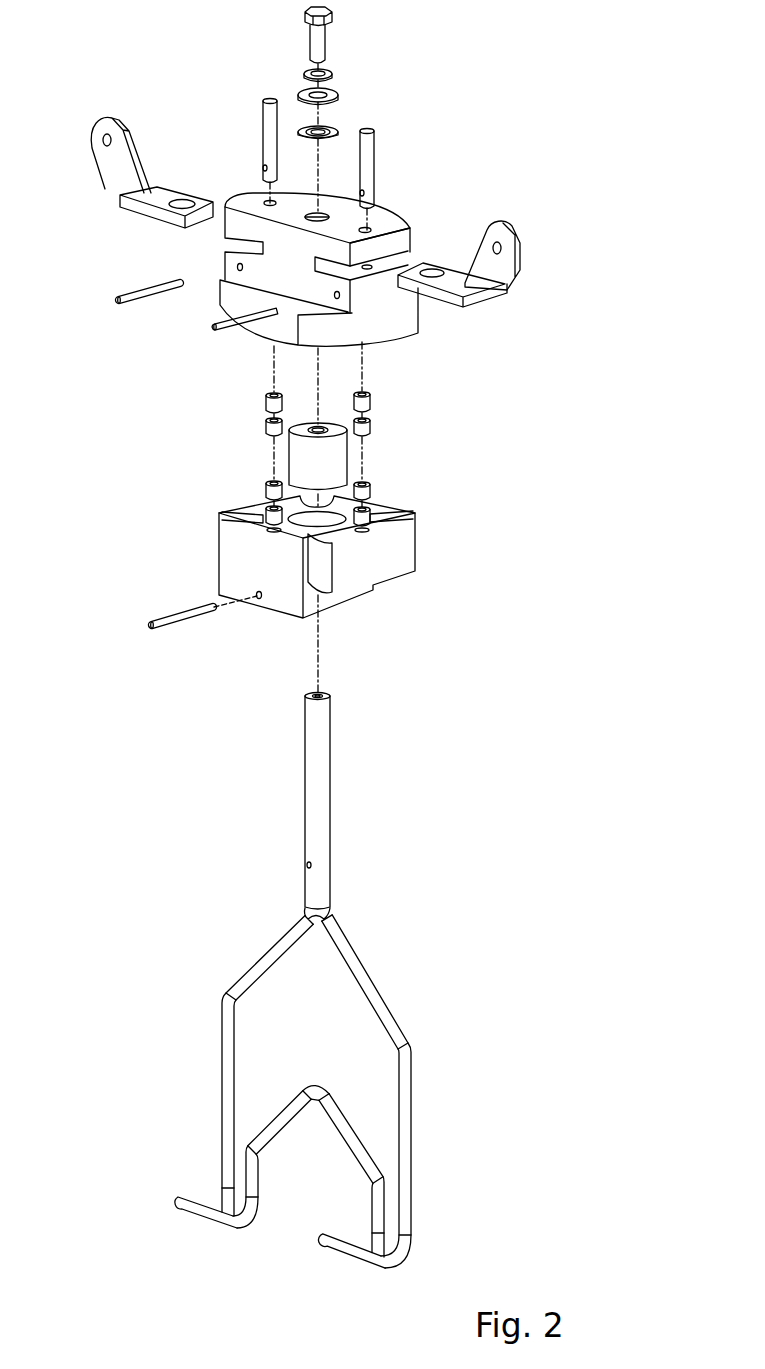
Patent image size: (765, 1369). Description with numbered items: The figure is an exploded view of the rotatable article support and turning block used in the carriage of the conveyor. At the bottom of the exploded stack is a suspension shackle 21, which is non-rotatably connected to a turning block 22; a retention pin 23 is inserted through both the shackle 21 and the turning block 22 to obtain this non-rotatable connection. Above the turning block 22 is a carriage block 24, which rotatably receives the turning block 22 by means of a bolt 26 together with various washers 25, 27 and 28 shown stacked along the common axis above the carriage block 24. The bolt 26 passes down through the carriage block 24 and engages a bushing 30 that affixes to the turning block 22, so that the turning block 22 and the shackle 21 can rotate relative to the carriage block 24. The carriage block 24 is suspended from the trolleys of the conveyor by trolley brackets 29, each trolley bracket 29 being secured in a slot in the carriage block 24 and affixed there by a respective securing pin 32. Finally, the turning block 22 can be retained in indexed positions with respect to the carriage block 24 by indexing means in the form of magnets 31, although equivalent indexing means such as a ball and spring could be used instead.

The suspension shackle 21 is at (410, 1095).
The turning block 22 is at (232, 562).
The retention pin 23 is at (183, 612).
The carriage block 24 is at (392, 327).
The washer 25 is at (335, 90).
The bolt 26 is at (325, 43).
The washer 27 is at (327, 70).
The washer 28 is at (340, 127).
The trolley bracket 29 is at (160, 200).
The bushing 30 is at (330, 461).
The magnets 31 is at (367, 508).
The securing pin 32 is at (373, 155).